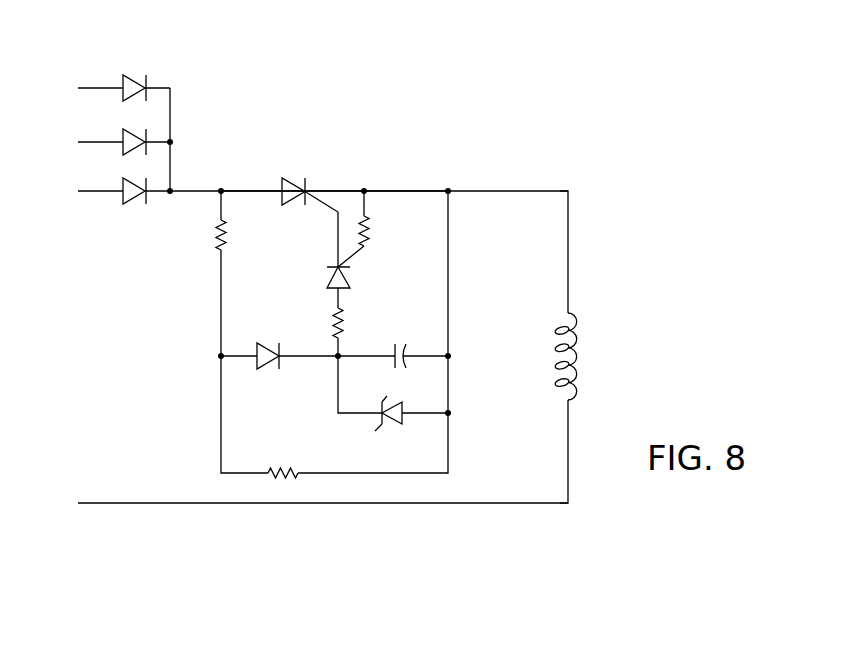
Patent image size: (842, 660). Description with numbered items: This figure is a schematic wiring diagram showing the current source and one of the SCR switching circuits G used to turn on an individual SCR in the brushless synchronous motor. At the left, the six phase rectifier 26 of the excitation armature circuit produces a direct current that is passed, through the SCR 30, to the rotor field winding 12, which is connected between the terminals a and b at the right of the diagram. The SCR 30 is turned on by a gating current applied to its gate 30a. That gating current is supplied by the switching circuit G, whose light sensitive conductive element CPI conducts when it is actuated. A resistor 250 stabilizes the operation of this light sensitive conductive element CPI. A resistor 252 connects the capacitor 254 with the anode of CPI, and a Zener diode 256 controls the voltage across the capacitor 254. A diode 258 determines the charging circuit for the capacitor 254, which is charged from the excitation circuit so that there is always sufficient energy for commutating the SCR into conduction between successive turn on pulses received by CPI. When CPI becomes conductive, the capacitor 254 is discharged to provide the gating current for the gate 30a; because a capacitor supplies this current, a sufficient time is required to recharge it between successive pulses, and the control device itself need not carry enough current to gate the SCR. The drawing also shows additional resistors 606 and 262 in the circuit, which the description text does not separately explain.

The six phase rectifier 26 is at (123, 187).
The SCR 30 is at (298, 178).
The gate 30a is at (320, 205).
The switching circuit G is at (427, 154).
The resistor 250 is at (366, 232).
The resistor 606 is at (224, 249).
The light sensitive conductive element CPI is at (368, 266).
The resistor 252 is at (345, 328).
The diode 258 is at (266, 364).
The capacitor 254 is at (400, 362).
The Zener diode 256 is at (388, 424).
The resistor 262 is at (290, 478).
The rotor field winding 12 is at (582, 358).
The terminal a is at (571, 186).
The terminal b is at (572, 511).